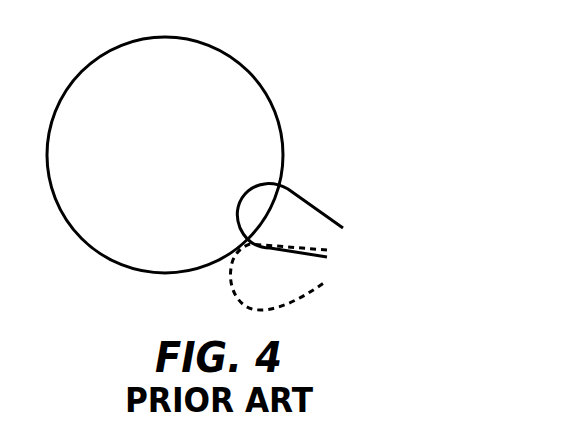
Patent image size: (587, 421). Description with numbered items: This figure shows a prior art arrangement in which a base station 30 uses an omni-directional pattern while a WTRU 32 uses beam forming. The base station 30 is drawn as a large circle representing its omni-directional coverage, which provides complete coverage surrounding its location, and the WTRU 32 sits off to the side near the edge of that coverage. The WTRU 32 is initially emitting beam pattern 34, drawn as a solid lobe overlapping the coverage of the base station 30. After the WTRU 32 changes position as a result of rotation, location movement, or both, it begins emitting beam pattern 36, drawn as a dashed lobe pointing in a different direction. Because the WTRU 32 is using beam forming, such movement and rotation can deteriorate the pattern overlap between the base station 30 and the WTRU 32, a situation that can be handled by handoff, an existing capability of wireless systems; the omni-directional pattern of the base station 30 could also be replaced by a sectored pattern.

The base station 30 is at (180, 135).
The WTRU 32 is at (378, 243).
The beam pattern 34 is at (302, 195).
The beam pattern 36 is at (228, 290).